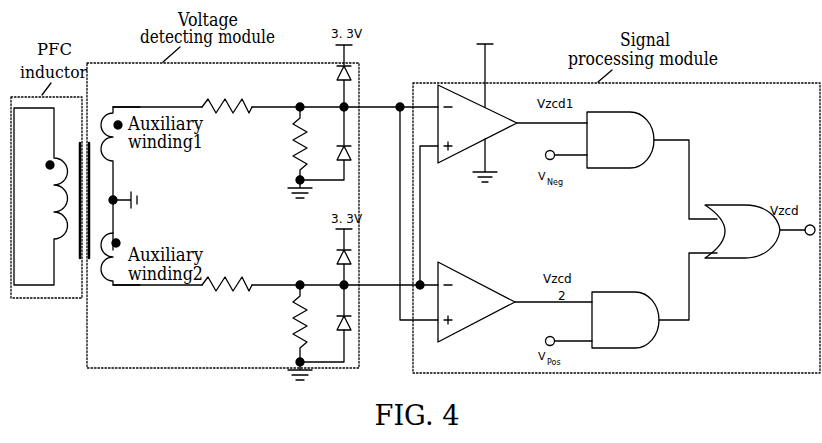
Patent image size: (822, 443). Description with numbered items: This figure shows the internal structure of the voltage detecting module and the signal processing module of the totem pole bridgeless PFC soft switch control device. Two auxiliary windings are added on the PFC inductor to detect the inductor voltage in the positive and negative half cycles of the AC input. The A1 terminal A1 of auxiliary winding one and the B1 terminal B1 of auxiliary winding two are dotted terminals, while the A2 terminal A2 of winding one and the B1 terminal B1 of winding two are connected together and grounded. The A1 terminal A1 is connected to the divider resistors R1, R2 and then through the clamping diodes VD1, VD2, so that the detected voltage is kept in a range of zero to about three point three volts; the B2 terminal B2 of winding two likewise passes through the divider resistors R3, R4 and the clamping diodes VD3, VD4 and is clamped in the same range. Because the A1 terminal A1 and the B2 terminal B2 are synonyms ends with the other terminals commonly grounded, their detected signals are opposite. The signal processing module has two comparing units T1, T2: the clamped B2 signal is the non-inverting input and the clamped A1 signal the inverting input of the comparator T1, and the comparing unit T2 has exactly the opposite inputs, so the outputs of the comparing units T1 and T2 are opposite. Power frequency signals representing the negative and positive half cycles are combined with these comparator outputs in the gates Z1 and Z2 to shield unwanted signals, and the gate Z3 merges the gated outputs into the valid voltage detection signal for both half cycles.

The divider resistor R1 is at (227, 93).
The divider resistor R2 is at (285, 143).
The divider resistor R3 is at (227, 275).
The divider resistor R4 is at (285, 323).
The clamping diode VD1 is at (363, 73).
The clamping diode VD2 is at (363, 153).
The clamping diode VD3 is at (363, 257).
The clamping diode VD4 is at (363, 323).
The comparing unit T1 is at (477, 104).
The comparing unit T2 is at (476, 294).
The AND gate Z1 is at (620, 130).
The AND gate Z2 is at (625, 311).
The OR gate Z3 is at (742, 223).
The A1 terminal of auxiliary winding 1 A1 is at (127, 98).
The A2 terminal of auxiliary winding 1 A2 is at (125, 189).
The B1 terminal of auxiliary winding 2 B1 is at (128, 238).
The B2 terminal of auxiliary winding 2 B2 is at (128, 296).